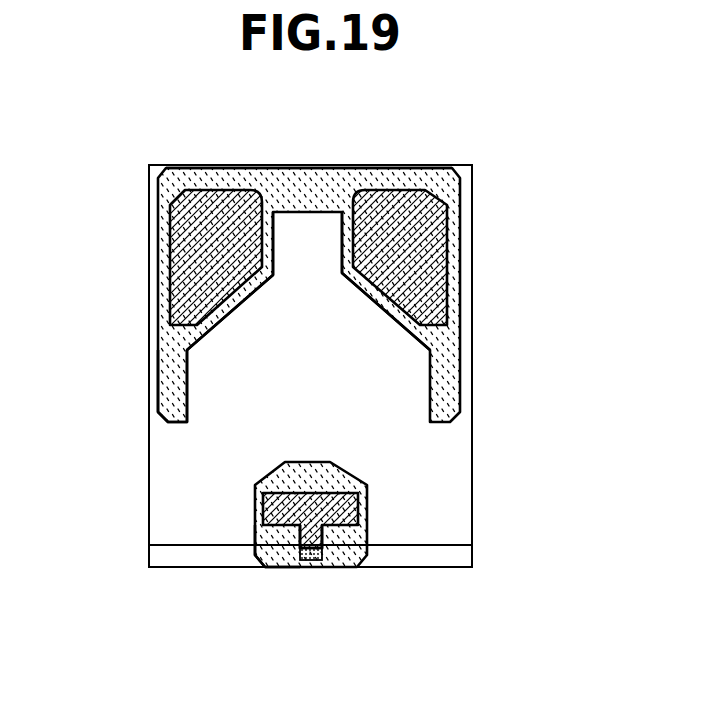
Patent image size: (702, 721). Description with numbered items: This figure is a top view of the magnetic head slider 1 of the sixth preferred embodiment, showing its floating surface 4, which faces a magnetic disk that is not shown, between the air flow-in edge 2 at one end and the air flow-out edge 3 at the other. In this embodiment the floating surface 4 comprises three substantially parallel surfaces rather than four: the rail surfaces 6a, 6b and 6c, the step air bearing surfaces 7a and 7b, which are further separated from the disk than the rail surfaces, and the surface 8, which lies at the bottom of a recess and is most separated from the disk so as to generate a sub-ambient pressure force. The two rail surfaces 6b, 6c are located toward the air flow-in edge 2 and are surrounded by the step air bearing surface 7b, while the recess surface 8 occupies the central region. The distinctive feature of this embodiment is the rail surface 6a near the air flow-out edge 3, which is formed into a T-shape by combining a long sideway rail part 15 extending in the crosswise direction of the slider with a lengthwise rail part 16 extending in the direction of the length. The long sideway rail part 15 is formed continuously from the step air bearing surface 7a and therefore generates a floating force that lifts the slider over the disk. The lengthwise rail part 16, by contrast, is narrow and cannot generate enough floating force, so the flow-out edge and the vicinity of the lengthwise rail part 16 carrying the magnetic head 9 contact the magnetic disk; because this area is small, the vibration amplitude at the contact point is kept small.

The magnetic head slider 1 is at (128, 302).
The air flow-in edge 2 is at (318, 166).
The air flow-out edge 3 is at (395, 567).
The floating surface 4 is at (389, 386).
The rail surface 6a is at (366, 502).
The rail surface 6b is at (196, 247).
The rail surface 6c is at (422, 248).
The step air bearing surface 7a is at (268, 533).
The step air bearing surface 7b is at (176, 352).
The recess bottom surface 8 is at (308, 294).
The magnetic head 9 is at (318, 558).
The long sideway rail part 15 is at (265, 497).
The lengthwise rail part 16 is at (290, 548).